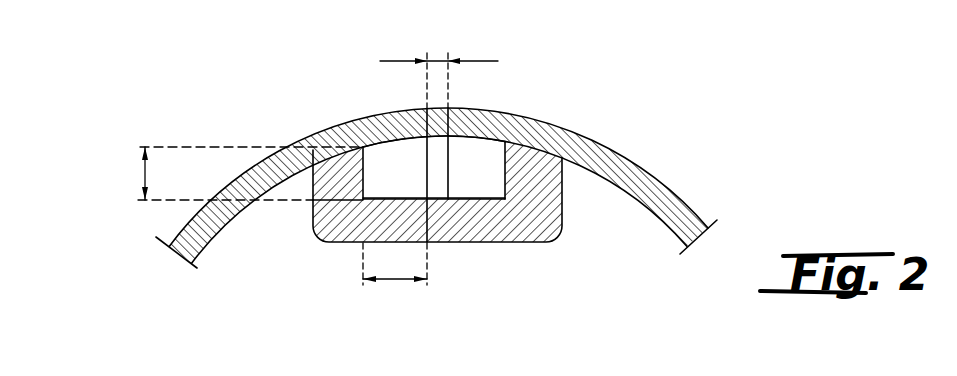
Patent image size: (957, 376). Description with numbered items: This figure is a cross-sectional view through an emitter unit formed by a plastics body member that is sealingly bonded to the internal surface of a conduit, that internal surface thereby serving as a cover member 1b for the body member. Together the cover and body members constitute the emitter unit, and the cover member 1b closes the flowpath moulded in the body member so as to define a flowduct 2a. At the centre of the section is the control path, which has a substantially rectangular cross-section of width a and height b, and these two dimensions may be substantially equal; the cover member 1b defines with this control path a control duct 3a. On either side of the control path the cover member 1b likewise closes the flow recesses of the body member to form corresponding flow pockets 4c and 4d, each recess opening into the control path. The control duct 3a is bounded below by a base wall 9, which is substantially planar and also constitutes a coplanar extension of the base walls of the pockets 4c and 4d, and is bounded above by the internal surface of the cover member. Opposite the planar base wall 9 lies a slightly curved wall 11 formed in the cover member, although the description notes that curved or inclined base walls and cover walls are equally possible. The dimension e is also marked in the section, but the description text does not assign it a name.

The cover member 1b is at (645, 178).
The flowduct 2a is at (488, 155).
The control duct 3a is at (458, 134).
The flow pocket 4c is at (383, 176).
The flow pocket 4d is at (483, 194).
The base wall 9 is at (462, 196).
The slightly curved wall 11 is at (393, 146).
The width a is at (437, 58).
The height b is at (143, 170).
The offset dimension e is at (395, 282).